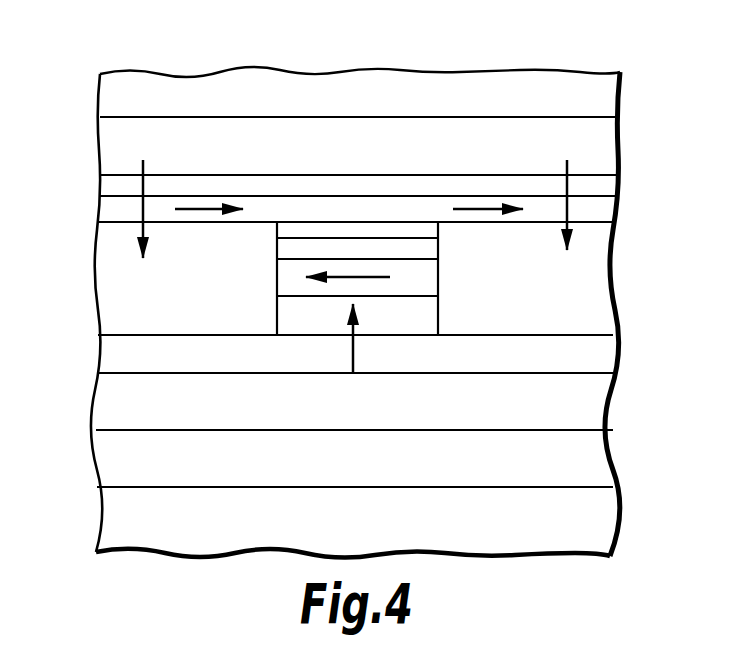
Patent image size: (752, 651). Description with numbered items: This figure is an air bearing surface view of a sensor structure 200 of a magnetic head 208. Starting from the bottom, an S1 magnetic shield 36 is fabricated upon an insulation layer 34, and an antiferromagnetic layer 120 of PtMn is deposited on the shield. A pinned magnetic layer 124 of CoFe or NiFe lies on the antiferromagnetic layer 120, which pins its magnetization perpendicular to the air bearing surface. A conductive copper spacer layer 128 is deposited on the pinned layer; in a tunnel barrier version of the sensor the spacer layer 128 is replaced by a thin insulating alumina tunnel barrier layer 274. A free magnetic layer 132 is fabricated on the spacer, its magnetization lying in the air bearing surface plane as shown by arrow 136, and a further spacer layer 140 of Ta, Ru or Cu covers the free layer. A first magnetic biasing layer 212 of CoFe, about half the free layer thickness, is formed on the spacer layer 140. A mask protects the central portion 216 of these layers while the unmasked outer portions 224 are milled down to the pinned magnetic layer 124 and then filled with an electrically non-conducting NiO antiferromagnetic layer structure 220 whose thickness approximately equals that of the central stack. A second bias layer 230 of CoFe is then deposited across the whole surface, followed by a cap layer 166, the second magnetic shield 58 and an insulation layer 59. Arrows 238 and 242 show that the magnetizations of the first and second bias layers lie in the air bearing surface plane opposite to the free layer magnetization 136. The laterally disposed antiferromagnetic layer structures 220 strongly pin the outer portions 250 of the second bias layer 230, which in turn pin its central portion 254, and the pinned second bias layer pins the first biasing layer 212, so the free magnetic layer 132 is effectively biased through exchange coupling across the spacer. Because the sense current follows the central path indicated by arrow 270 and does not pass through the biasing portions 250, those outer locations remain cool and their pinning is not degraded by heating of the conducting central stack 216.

The sensor structure 200 is at (150, 67).
The magnetic head 208 is at (273, 62).
The central portion of the sensor layers 216 is at (376, 150).
The outer portions of the sensor 224 is at (358, 192).
The arrow indicating magnetization of the first bias layer 238 is at (390, 230).
The arrow indicating magnetization of the second bias layer 242 is at (380, 209).
The central portion of the second bias layer 254 is at (393, 207).
The cap layer 166 is at (482, 192).
The insulation layer 59 is at (598, 95).
The second magnetic shield 58 is at (602, 147).
The outer portions of the second bias layer 250 is at (115, 208).
The second bias layer 230 is at (598, 211).
The antiferromagnetic layer structure 220 is at (110, 295).
The spacer layer 140 is at (277, 250).
The first magnetic biasing layer 212 is at (440, 224).
The free magnetic layer 132 is at (438, 278).
The spacer layer 128 is at (438, 316).
The tunnel barrier layer 274 is at (277, 318).
The arrow indicating magnetization of the free magnetic layer 136 is at (350, 284).
The arrow indicating central electrical current path 270 is at (353, 373).
The pinned magnetic layer 124 is at (590, 352).
The antiferromagnetic layer 120 is at (590, 402).
The S1 magnetic shield 36 is at (593, 455).
The insulation layer 34 is at (587, 518).